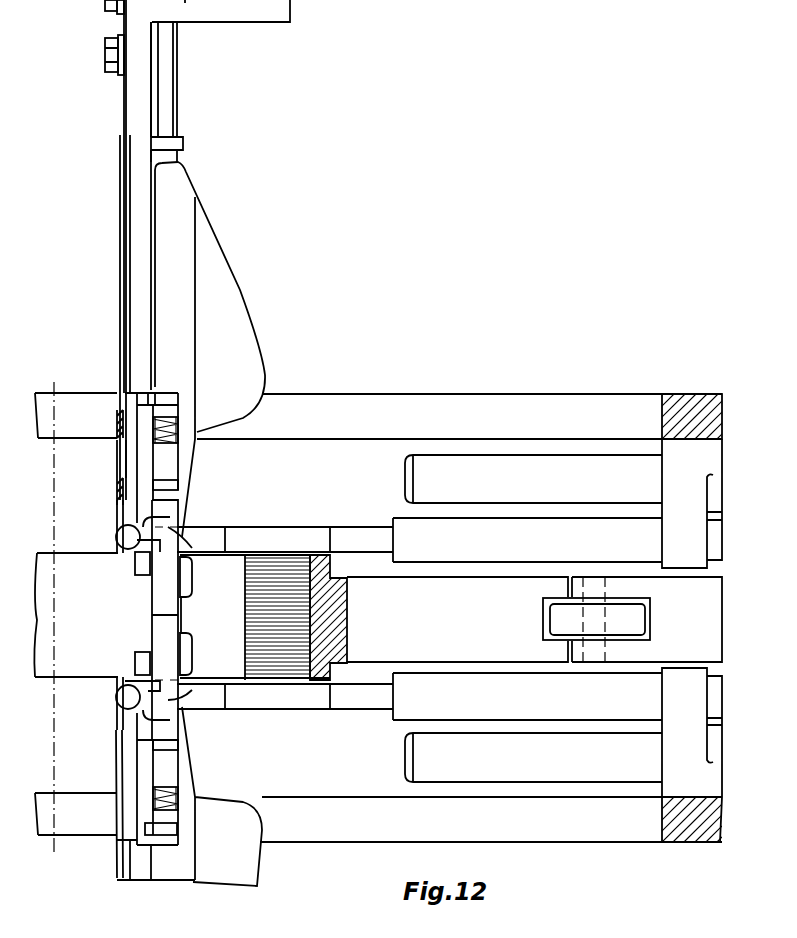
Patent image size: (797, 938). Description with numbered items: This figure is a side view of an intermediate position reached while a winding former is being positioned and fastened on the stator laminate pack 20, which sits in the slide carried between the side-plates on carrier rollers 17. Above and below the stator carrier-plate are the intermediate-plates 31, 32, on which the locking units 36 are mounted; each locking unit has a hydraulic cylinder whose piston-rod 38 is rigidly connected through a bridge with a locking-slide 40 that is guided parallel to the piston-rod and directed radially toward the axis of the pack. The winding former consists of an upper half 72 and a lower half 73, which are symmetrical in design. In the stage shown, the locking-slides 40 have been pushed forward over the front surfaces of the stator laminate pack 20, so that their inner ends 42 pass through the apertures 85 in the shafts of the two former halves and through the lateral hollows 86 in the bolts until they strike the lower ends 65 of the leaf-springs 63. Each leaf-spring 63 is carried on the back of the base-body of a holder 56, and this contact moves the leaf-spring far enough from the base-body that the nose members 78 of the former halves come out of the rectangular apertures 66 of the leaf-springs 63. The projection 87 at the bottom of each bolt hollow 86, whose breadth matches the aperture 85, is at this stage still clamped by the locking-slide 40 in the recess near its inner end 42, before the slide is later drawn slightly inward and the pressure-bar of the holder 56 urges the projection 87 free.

The carrier roller 17 is at (556, 612).
The stator laminate pack 20 is at (285, 555).
The intermediate-plate 31 is at (686, 400).
The intermediate-plate 32 is at (672, 818).
The locking unit 36 is at (694, 456).
The piston-rod 38 is at (527, 460).
The locking-slide 40 is at (412, 528).
The inner end 42 is at (128, 556).
The holder 56 is at (183, 92).
The leaf-spring 63 is at (123, 333).
The lower end 65 is at (117, 540).
The longitudinal aperture 66 is at (121, 462).
The upper half 72 is at (228, 251).
The lower half 73 is at (232, 873).
The nose member 78 is at (132, 462).
The aperture 85 is at (170, 530).
The lateral hollow 86 is at (170, 516).
The projection 87 is at (147, 652).